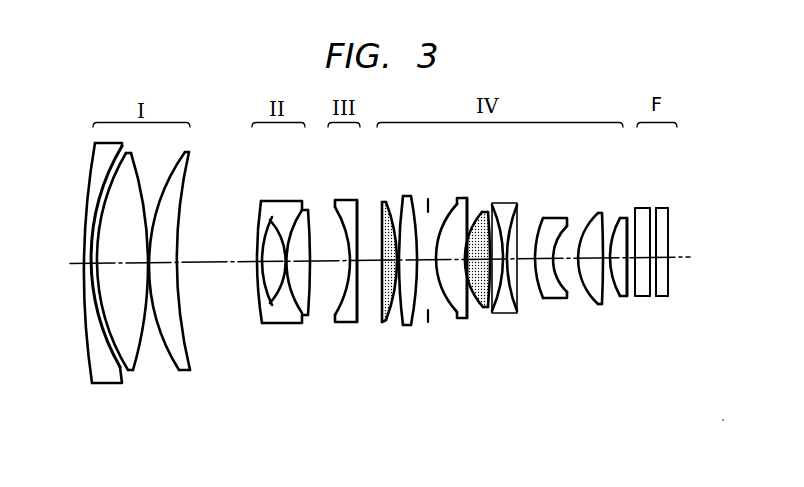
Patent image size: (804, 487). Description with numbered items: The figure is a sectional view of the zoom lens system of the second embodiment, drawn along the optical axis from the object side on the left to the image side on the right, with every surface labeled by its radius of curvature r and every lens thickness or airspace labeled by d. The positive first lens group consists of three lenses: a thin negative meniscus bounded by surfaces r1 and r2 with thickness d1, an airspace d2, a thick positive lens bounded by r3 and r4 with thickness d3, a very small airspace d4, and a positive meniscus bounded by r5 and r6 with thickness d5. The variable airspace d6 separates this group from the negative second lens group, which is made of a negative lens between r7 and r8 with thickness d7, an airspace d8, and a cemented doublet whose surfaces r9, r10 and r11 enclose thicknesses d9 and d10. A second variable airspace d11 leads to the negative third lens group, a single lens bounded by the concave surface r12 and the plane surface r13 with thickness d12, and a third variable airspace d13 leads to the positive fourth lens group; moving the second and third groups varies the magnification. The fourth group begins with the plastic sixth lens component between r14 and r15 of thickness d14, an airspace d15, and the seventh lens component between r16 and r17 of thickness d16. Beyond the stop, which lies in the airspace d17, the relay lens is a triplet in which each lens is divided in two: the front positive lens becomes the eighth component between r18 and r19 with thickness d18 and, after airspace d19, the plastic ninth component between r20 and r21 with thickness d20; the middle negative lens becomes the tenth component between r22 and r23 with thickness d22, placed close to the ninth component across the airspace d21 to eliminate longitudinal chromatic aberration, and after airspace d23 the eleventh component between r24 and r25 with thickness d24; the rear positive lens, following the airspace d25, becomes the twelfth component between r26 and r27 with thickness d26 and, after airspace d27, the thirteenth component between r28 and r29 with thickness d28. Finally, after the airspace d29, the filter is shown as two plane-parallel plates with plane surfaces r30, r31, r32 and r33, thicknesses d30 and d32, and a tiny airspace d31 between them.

The radius of curvature of the first lens surface r1 is at (92, 385).
The radius of curvature of the second lens surface r2 is at (120, 369).
The radius of curvature of the third lens surface r3 is at (128, 372).
The radius of curvature of the fourth lens surface r4 is at (133, 372).
The radius of curvature of the fifth lens surface r5 is at (180, 372).
The radius of curvature of the sixth lens surface r6 is at (190, 372).
The radius of curvature of the seventh lens surface r7 is at (262, 325).
The radius of curvature of the eighth lens surface r8 is at (272, 307).
The radius of curvature of the ninth lens surface r9 is at (270, 305).
The radius of curvature of the tenth lens surface r10 is at (302, 315).
The radius of curvature of the eleventh lens surface r11 is at (308, 317).
The radius of curvature of the twelfth lens surface r12 is at (335, 317).
The radius of curvature of the thirteenth lens surface r13 is at (357, 324).
The radius of curvature of the fourteenth lens surface r14 is at (382, 324).
The radius of curvature of the fifteenth lens surface r15 is at (386, 322).
The radius of curvature of the sixteenth lens surface r16 is at (403, 327).
The radius of curvature of the seventeenth lens surface r17 is at (411, 327).
The radius of curvature of the eighteenth lens surface r18 is at (457, 319).
The radius of curvature of the nineteenth lens surface r19 is at (467, 320).
The radius of curvature of the twentieth lens surface r20 is at (483, 309).
The radius of curvature of the twenty-first lens surface r21 is at (488, 309).
The radius of curvature of the twenty-second lens surface r22 is at (492, 315).
The radius of curvature of the twenty-third lens surface r23 is at (517, 315).
The radius of curvature of the twenty-fourth lens surface r24 is at (543, 300).
The radius of curvature of the twenty-fifth lens surface r25 is at (567, 300).
The radius of curvature of the twenty-sixth lens surface r26 is at (598, 306).
The radius of curvature of the twenty-seventh lens surface r27 is at (602, 306).
The radius of curvature of the twenty-eighth lens surface r28 is at (620, 298).
The radius of curvature of the twenty-ninth lens surface r29 is at (627, 298).
The radius of curvature of the thirtieth surface r30 is at (635, 298).
The radius of curvature of the thirty-first surface r31 is at (650, 298).
The radius of curvature of the thirty-second surface r32 is at (656, 298).
The radius of curvature of the thirty-third surface r33 is at (668, 298).
The thickness of the first lens d1 is at (85, 257).
The airspace between the first and second lenses d2 is at (92, 256).
The thickness of the second lens d3 is at (111, 262).
The airspace between the second and third lenses d4 is at (147, 258).
The thickness of the third lens d5 is at (165, 260).
The variable airspace between the first and second lens groups d6 is at (218, 262).
The thickness of the first lens of the second group d7 is at (259, 258).
The airspace in the second lens group d8 is at (273, 257).
The thickness of the first doublet lens d9 is at (286, 257).
The thickness of the second doublet lens d10 is at (298, 257).
The variable airspace between the second and third lens groups d11 is at (330, 257).
The thickness of the third group lens d12 is at (354, 257).
The variable airspace between the third and fourth lens groups d13 is at (370, 257).
The thickness of the sixth lens component d14 is at (390, 257).
The airspace between the sixth and seventh lens components d15 is at (398, 256).
The thickness of the seventh lens component d16 is at (408, 256).
The airspace between the seventh and eighth lens components d17 is at (427, 255).
The thickness of the eighth lens component d18 is at (452, 255).
The airspace between the eighth and ninth lens components d19 is at (467, 254).
The thickness of the ninth lens component d20 is at (478, 255).
The airspace between the ninth and tenth lens components d21 is at (496, 254).
The thickness of the tenth lens component d22 is at (505, 254).
The airspace between the tenth and eleventh lens components d23 is at (521, 254).
The thickness of the eleventh lens component d24 is at (544, 253).
The airspace between the eleventh and twelfth lens components d25 is at (565, 253).
The thickness of the twelfth lens component d26 is at (590, 252).
The airspace between the twelfth and thirteenth lens components d27 is at (606, 252).
The thickness of the thirteenth lens component d28 is at (619, 252).
The airspace between the thirteenth lens component and the filter d29 is at (631, 251).
The thickness of the first filter plate d30 is at (642, 251).
The airspace between the filter plates d31 is at (653, 251).
The thickness of the second filter plate d32 is at (662, 251).